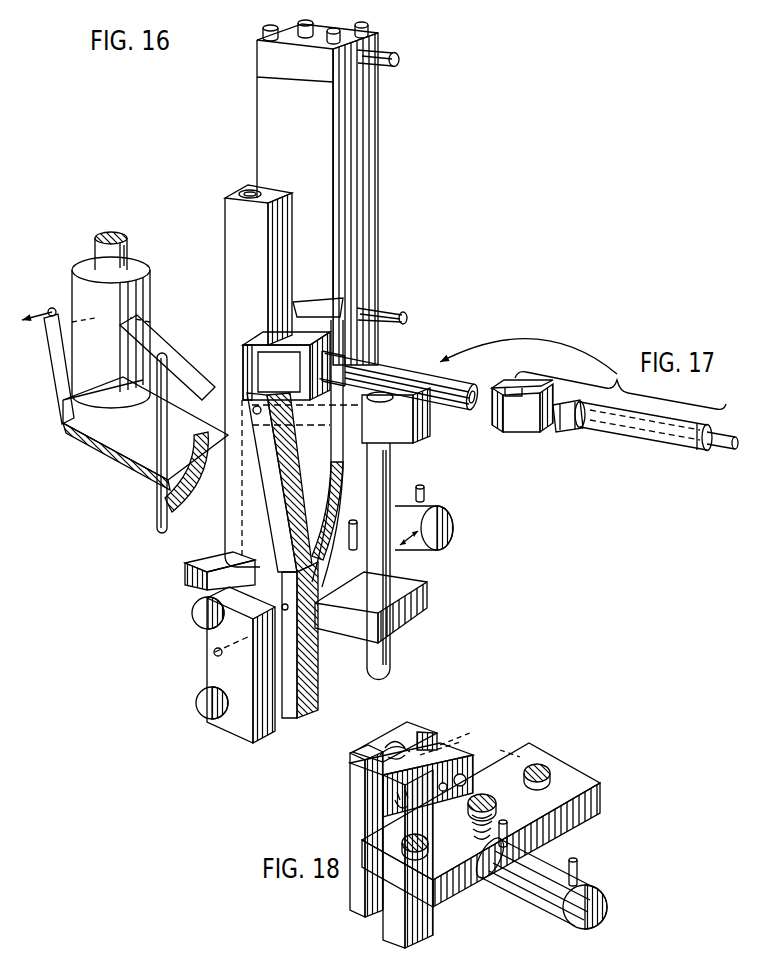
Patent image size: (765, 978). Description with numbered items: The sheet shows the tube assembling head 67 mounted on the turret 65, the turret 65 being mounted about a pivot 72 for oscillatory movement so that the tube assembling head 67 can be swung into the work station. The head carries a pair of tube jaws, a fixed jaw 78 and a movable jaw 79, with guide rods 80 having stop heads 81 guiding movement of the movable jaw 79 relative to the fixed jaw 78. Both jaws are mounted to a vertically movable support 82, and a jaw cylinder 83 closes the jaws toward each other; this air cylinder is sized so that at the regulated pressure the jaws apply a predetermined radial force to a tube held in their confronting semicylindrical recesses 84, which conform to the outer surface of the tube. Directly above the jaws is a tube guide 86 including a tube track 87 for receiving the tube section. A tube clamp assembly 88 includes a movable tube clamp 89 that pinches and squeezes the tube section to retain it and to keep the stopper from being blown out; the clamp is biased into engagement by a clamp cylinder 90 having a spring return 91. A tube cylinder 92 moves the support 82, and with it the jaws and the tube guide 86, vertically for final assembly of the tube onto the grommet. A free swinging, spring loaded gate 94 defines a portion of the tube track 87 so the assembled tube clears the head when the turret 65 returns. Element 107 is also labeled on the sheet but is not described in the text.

In FIG. 16, the turret 65 is at (68, 452).
In FIG. 16, the tube assembling head 67 is at (382, 205).
In FIG. 16, the pivot 72 is at (102, 262).
In FIG. 16, the fixed jaw 78 is at (307, 712).
In FIG. 18, the fixed jaw 78 is at (393, 928).
In FIG. 16, the movable jaw 79 is at (240, 728).
In FIG. 18, the movable jaw 79 is at (356, 826).
In FIG. 18, the guide rods 80 is at (433, 740).
In FIG. 16, the stop heads 81 is at (192, 612).
In FIG. 16, the vertically movable support 82 is at (427, 598).
In FIG. 18, the vertically movable support 82 is at (588, 820).
In FIG. 16, the jaw cylinder 83 is at (435, 528).
In FIG. 18, the jaw cylinder 83 is at (596, 905).
In FIG. 16, the semicylindrical recesses 84 is at (207, 594).
In FIG. 18, the semicylindrical recesses 84 is at (377, 748).
In FIG. 16, the tube guide 86 is at (230, 248).
In FIG. 16, the tube track 87 is at (240, 190).
In FIG. 16, the tube clamp assembly 88 is at (318, 335).
In FIG. 16, the movable tube clamp 89 is at (262, 348).
In FIG. 17, the movable tube clamp 89 is at (535, 390).
In FIG. 16, the clamp cylinder 90 is at (410, 373).
In FIG. 17, the clamp cylinder 90 is at (702, 425).
In FIG. 17, the spring return 91 is at (609, 428).
In FIG. 16, the tube cylinder 92 is at (370, 136).
In FIG. 16, the gate 94 is at (268, 520).
In FIG. 16, the jaw 107 is at (250, 455).